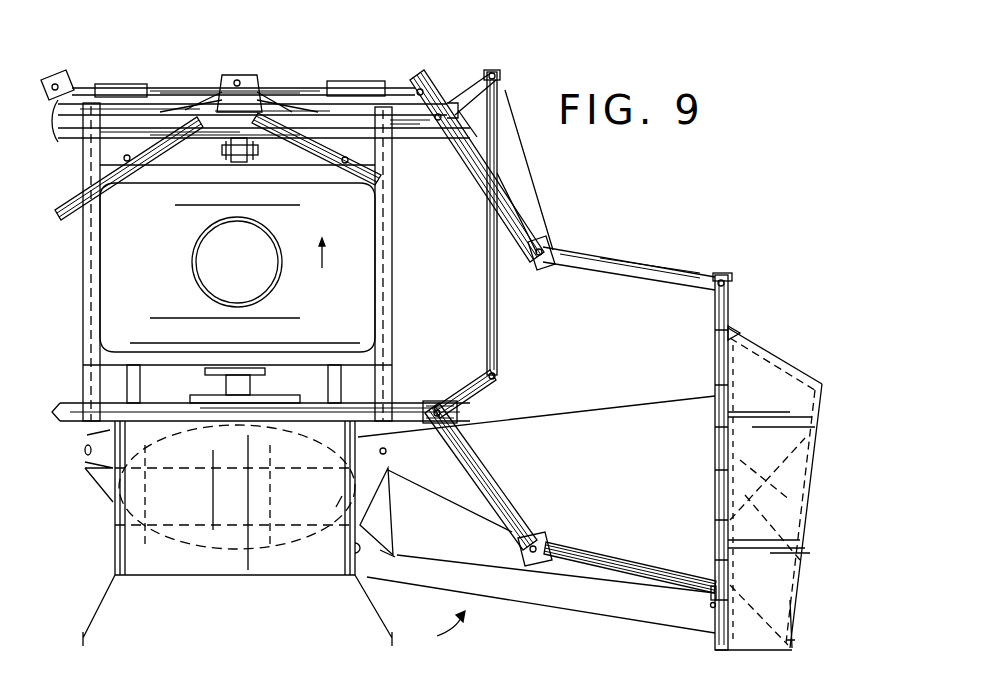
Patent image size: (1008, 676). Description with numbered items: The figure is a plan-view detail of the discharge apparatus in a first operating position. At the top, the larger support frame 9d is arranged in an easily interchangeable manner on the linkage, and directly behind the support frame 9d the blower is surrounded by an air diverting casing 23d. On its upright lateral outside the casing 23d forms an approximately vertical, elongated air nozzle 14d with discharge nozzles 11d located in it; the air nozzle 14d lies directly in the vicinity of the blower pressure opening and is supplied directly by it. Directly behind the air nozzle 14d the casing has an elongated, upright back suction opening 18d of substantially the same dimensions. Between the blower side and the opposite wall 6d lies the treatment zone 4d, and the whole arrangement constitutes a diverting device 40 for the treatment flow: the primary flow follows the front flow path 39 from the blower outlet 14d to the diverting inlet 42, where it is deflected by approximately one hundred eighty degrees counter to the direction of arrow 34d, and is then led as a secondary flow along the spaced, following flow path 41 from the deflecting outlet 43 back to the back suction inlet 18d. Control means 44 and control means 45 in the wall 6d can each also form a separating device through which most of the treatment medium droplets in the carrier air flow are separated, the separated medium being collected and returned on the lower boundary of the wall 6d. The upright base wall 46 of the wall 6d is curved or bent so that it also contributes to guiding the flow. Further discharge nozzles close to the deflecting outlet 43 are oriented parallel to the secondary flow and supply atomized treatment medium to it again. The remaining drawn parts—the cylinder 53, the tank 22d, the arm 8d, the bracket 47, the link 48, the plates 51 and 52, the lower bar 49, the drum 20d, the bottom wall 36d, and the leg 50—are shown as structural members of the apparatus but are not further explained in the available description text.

The hydraulic cylinder 53 is at (330, 86).
The support frame 9d is at (60, 126).
The tank 22d is at (110, 273).
The arrow 34d is at (341, 253).
The arm 8d is at (642, 248).
The wall 6d is at (768, 338).
The pivot bracket 47 is at (392, 424).
The treatment zone 4d is at (538, 448).
The front flow path 39 is at (626, 411).
The control means 44 is at (728, 384).
The diverting inlet 42 is at (712, 410).
The control means 45 is at (767, 541).
The air nozzle 14d is at (358, 448).
The discharge nozzles 11d is at (390, 451).
The link 48 is at (392, 467).
The plate 51 is at (360, 490).
The triangular plate 52 is at (365, 524).
The lower bar 49 is at (382, 550).
The back suction opening 18d is at (357, 549).
The air diverting casing 23d is at (118, 505).
The drum 20d is at (237, 494).
The bottom wall 36d is at (258, 573).
The support leg 50 is at (367, 597).
The diverting device 40 is at (436, 627).
The following flow path 41 is at (605, 566).
The deflecting outlet 43 is at (712, 598).
The base wall 46 is at (797, 604).